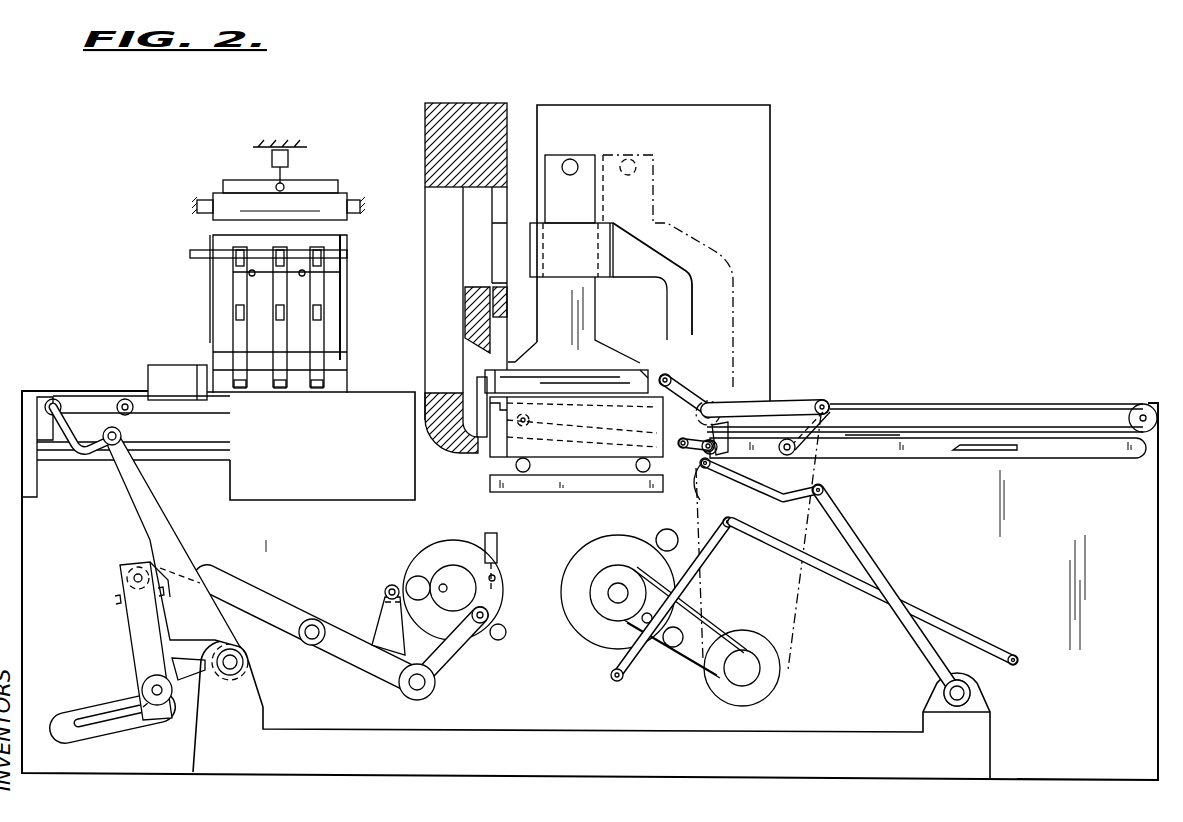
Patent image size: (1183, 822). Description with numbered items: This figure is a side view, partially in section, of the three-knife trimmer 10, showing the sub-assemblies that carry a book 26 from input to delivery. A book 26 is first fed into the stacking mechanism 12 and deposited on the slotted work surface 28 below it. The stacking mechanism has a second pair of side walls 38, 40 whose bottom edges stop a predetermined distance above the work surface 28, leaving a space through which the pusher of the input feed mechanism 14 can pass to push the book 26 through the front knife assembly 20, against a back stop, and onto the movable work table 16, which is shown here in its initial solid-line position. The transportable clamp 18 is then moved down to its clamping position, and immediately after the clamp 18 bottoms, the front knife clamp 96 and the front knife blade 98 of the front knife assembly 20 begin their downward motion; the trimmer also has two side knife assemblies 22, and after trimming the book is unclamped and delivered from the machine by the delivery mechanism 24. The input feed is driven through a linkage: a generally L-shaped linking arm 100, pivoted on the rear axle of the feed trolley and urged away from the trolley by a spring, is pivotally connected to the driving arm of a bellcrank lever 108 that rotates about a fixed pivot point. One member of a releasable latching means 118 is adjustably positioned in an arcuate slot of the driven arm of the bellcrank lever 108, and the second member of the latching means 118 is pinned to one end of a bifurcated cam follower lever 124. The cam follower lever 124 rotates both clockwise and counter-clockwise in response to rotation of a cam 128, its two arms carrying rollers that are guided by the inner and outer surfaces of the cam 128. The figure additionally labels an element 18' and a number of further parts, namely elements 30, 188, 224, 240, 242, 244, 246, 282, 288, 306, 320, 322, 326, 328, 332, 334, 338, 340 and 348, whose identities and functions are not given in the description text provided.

The three-knife trimmer 10 is at (891, 144).
The stacking mechanism 12 is at (200, 268).
The input feed mechanism 14 is at (186, 346).
The movable work table 16 is at (503, 460).
The transportable clamp 18 is at (618, 247).
The ram in alternate position 18' is at (668, 272).
The front knife assembly 20 is at (472, 96).
The side knife assemblies 22 is at (643, 104).
The delivery mechanism 24 is at (835, 417).
The book 26 is at (318, 181).
The slotted work surface 28 is at (375, 393).
The conveyor 30 is at (957, 403).
The side wall 38 is at (207, 298).
The side wall 40 is at (348, 288).
The front knife clamp 96 is at (508, 235).
The front knife blade 98 is at (470, 372).
The L-shaped linking arm 100 is at (62, 465).
The bellcrank lever 108 is at (158, 514).
The releasable latching means 118 is at (128, 607).
The bifurcated cam follower lever 124 is at (247, 597).
The cam 128 is at (473, 522).
The pin 188 is at (498, 643).
The follower lever 224 is at (408, 577).
The stop 240 is at (497, 548).
The cam 242 is at (597, 535).
The belt 244 is at (673, 653).
The roller 246 is at (668, 530).
The rail 282 is at (765, 452).
The bar 288 is at (872, 453).
The link 306 is at (655, 415).
The lever 320 is at (708, 570).
The pivot 322 is at (615, 679).
The link 326 is at (838, 585).
The link 328 is at (868, 548).
The link 332 is at (737, 487).
The center line 334 is at (693, 472).
The pulley 338 is at (785, 638).
The cam roller 340 is at (705, 430).
The slot 348 is at (977, 453).